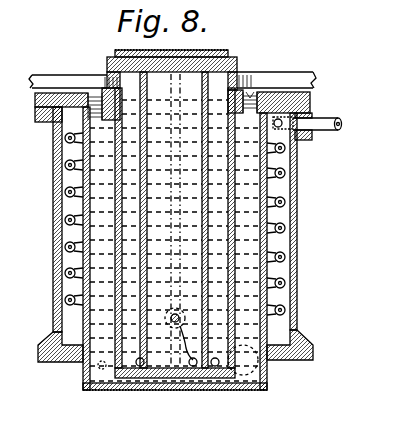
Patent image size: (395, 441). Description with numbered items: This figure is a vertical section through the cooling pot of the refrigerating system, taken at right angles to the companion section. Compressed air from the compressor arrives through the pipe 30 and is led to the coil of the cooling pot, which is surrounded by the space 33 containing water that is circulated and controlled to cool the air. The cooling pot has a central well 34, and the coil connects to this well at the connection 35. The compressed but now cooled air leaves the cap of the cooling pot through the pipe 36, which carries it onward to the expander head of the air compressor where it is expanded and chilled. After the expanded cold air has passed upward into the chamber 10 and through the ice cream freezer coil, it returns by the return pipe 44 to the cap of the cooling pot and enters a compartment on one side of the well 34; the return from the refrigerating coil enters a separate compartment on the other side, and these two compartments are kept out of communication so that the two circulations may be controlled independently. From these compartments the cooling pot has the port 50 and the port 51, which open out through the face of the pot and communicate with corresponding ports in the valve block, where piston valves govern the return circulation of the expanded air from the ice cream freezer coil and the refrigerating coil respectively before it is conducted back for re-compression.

The chamber 10 is at (0, 338).
The pipe 30 is at (326, 119).
The space 33 is at (284, 324).
The central well 34 is at (120, 182).
The connection of coil to well 35 is at (193, 366).
The pipe 36 is at (263, 76).
The return pipe 44 is at (53, 77).
The port 50 is at (112, 369).
The port 51 is at (252, 364).